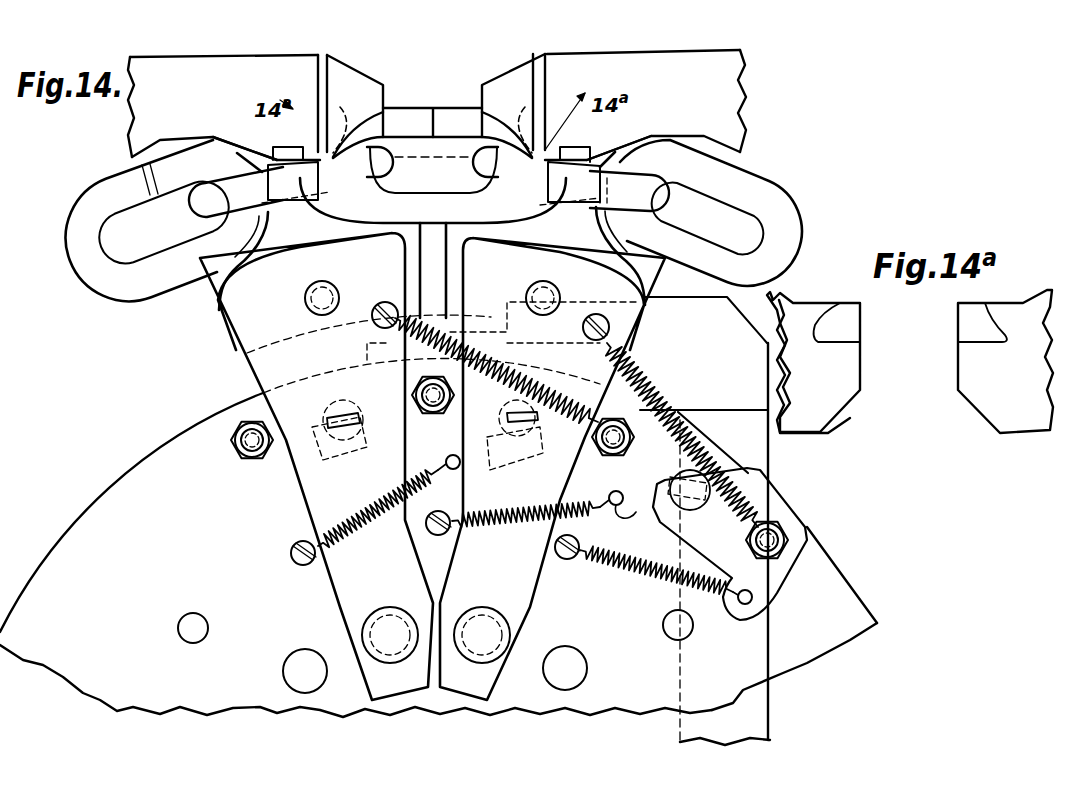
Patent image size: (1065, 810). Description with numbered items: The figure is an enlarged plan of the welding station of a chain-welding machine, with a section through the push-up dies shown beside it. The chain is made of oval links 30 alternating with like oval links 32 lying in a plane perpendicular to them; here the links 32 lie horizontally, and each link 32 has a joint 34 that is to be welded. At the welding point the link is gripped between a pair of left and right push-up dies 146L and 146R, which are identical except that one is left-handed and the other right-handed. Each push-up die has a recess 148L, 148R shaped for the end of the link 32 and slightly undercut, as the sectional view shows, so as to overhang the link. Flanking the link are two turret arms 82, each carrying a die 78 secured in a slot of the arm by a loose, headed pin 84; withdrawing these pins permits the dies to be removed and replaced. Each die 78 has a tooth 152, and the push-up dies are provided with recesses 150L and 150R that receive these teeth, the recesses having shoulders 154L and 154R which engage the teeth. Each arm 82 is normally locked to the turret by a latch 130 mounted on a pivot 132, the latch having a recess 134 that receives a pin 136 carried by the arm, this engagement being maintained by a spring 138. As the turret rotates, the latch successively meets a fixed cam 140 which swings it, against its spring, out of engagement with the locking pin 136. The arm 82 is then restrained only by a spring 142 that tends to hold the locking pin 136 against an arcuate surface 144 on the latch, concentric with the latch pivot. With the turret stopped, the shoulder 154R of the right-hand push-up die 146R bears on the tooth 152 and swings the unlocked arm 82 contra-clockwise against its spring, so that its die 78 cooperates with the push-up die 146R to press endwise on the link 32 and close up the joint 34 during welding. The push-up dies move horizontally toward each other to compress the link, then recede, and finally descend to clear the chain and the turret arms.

In FIG. 14, the oval links 30 is at (310, 190).
In FIG. 14, the oval links 32 is at (181, 272).
In FIG. 14, the joint 34 is at (150, 172).
In FIG. 14, the die 78 is at (256, 238).
In FIG. 14, the arm 82 is at (330, 250).
In FIG. 14, the headed pin 84 is at (333, 283).
In FIG. 14, the latch 130 is at (377, 442).
In FIG. 14, the pivot 132 is at (415, 396).
In FIG. 14, the recess 134 is at (548, 462).
In FIG. 14, the pin 136 is at (338, 402).
In FIG. 14, the spring 138 is at (318, 530).
In FIG. 14, the fixed cam 140 is at (557, 346).
In FIG. 14, the spring 142 is at (480, 327).
In FIG. 14, the arcuate surface 144 is at (355, 355).
In FIG. 14, the left push-up die 146L is at (367, 74).
In FIG. 14, the right push-up die 146R is at (520, 73).
In FIG. 14, the recess 148L is at (350, 122).
In FIG. 14A, the recess 148L is at (836, 312).
In FIG. 14, the recess 148R is at (520, 122).
In FIG. 14A, the recess 148R is at (985, 312).
In FIG. 14, the recess 150L is at (300, 147).
In FIG. 14, the recess 150R is at (585, 147).
In FIG. 14, the tooth 152 is at (434, 183).
In FIG. 14, the shoulder 154L is at (273, 157).
In FIG. 14, the shoulder 154R is at (595, 158).